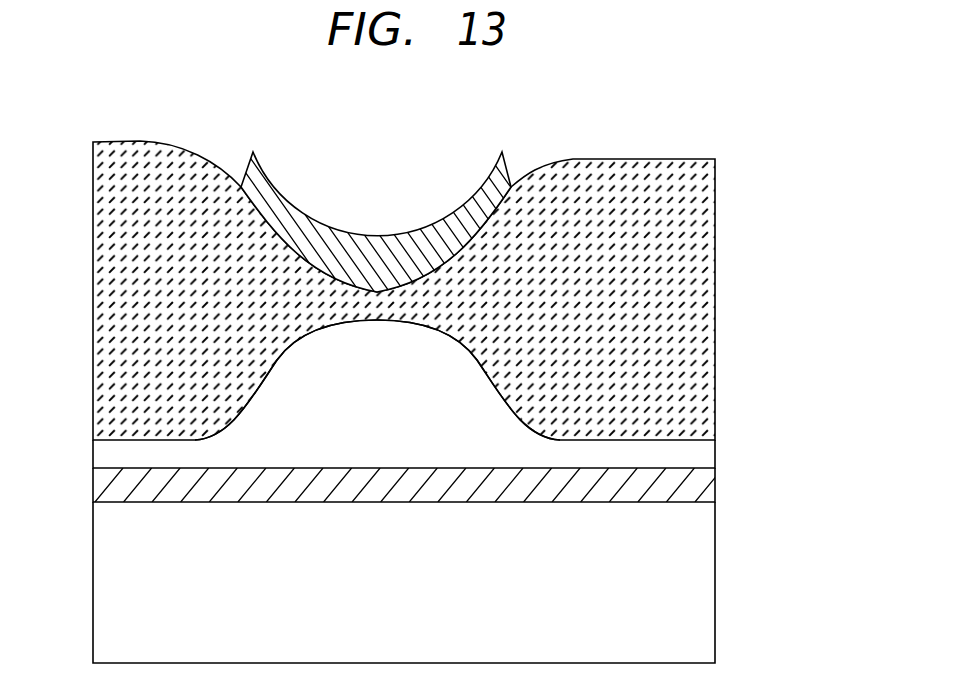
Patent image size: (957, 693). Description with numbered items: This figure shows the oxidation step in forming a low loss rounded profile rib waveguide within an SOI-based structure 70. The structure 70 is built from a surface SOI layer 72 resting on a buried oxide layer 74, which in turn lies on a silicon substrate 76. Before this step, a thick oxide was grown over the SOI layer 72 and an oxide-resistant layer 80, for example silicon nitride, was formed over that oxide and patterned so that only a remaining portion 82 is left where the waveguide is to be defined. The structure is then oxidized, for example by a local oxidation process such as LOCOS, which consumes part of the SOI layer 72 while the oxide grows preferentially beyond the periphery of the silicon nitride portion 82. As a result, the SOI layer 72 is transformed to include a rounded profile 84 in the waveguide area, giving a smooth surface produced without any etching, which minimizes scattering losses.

The SOI-based structure 70 is at (787, 442).
The surface SOI layer 72 is at (105, 453).
The buried oxide layer 74 is at (703, 490).
The silicon substrate 76 is at (105, 582).
The oxide-resistant layer 80 is at (714, 294).
The remaining portion of layer 80 82 is at (378, 237).
The rounded profile 84 is at (317, 333).